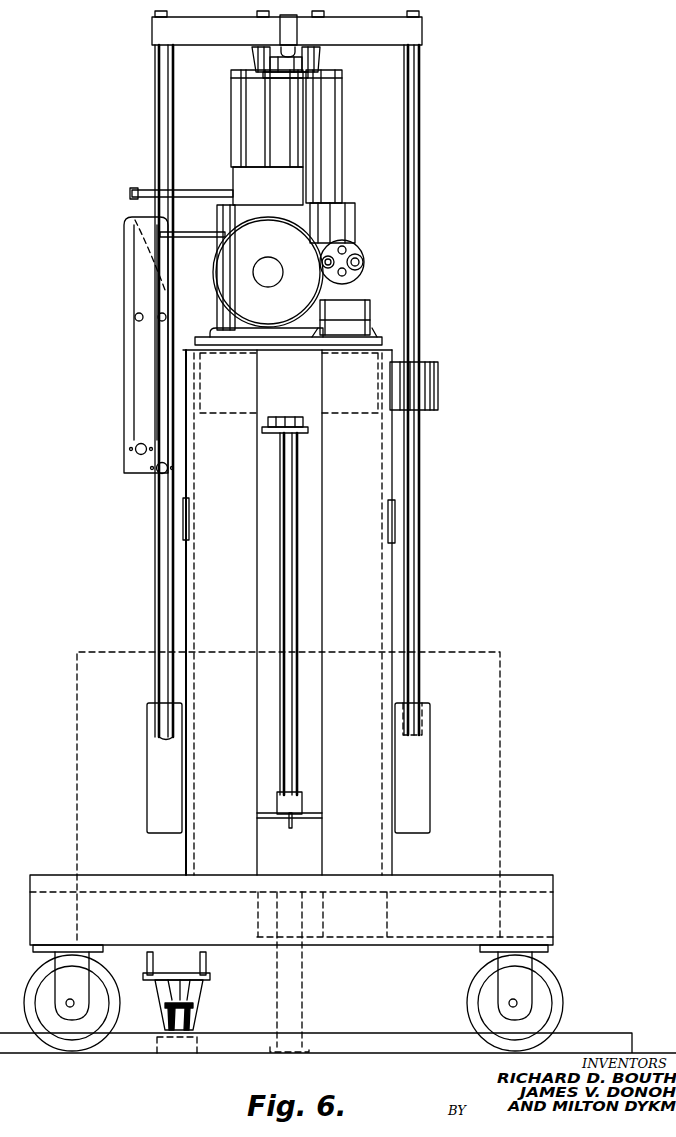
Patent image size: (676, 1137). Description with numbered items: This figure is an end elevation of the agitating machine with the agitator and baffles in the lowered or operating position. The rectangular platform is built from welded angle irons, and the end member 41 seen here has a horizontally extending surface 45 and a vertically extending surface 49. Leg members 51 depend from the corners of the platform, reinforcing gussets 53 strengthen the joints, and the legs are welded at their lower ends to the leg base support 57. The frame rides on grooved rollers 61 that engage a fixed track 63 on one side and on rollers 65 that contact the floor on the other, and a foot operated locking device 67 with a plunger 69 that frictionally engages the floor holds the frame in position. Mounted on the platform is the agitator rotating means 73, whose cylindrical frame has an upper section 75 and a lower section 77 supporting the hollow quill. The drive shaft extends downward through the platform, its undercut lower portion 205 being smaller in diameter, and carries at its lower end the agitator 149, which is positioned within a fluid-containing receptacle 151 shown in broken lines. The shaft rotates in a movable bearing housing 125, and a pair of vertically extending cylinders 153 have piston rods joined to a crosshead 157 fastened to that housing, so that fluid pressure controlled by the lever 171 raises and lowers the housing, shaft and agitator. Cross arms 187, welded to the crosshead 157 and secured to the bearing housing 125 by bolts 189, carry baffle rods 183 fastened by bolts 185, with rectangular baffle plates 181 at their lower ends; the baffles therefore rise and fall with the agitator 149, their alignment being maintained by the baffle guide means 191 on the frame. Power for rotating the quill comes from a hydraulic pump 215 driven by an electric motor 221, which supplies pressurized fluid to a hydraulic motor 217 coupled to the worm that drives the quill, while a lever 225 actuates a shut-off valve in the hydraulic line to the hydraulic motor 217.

The end member 41 is at (315, 345).
The horizontally extending surface 45 is at (280, 353).
The vertically extending surface 49 is at (305, 393).
The leg members 51 is at (245, 540).
The reinforcing gussets 53 is at (186, 523).
The leg base support 57 is at (543, 900).
The grooved rollers 61 is at (540, 1003).
The fixed track 63 is at (590, 1035).
The rollers 65 is at (547, 982).
The foot operated locking device 67 is at (202, 990).
The plunger 69 is at (205, 1042).
The agitator rotating means 73 is at (312, 178).
The upper cylinder frame section 75 is at (330, 103).
The lower cylinder frame section 77 is at (352, 215).
The bearing housing 125 is at (326, 55).
The agitator 149 is at (303, 832).
The fluid-containing receptacle 151 is at (505, 717).
The cylinders 153 is at (278, 108).
The crosshead 157 is at (290, 34).
The lever 171 is at (138, 420).
The baffle plates 181 is at (160, 775).
The baffle rods 183 is at (165, 680).
The bolts 185 is at (155, 14).
The cross arms 187 is at (160, 35).
The bolts 189 is at (262, 17).
The baffle guide means 191 is at (446, 397).
The lower portion of drive shaft 205 is at (300, 616).
The hydraulic pump 215 is at (245, 174).
The hydraulic motor 217 is at (345, 250).
The electric motor 221 is at (235, 277).
The lever 225 is at (162, 455).